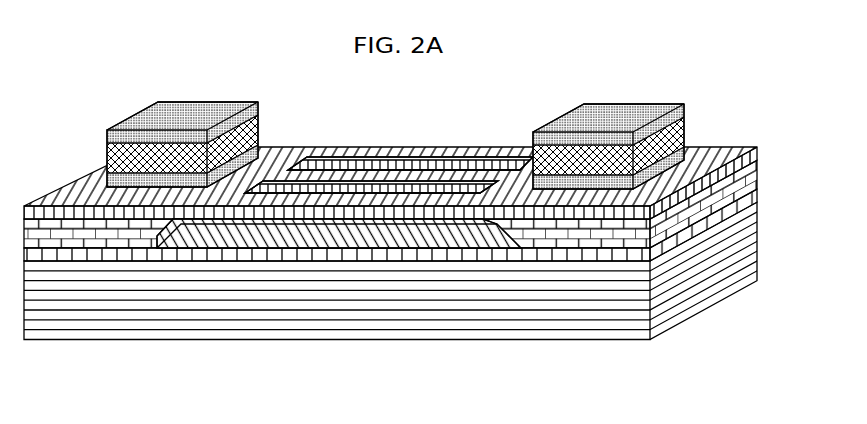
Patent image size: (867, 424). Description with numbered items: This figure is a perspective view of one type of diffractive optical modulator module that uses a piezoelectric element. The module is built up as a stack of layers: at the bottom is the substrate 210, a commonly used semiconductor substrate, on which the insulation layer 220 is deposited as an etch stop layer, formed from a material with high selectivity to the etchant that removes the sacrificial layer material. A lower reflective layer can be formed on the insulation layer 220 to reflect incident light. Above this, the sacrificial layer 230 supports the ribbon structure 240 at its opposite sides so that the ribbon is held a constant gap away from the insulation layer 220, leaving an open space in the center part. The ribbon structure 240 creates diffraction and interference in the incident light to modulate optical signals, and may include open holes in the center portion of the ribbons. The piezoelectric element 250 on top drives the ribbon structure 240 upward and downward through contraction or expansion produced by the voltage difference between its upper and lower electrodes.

The substrate 210 is at (752, 252).
The insulation layer 220 is at (756, 198).
The sacrificial layer 230 is at (757, 174).
The ribbon structure 240 is at (757, 152).
The piezoelectric element 250 is at (687, 110).